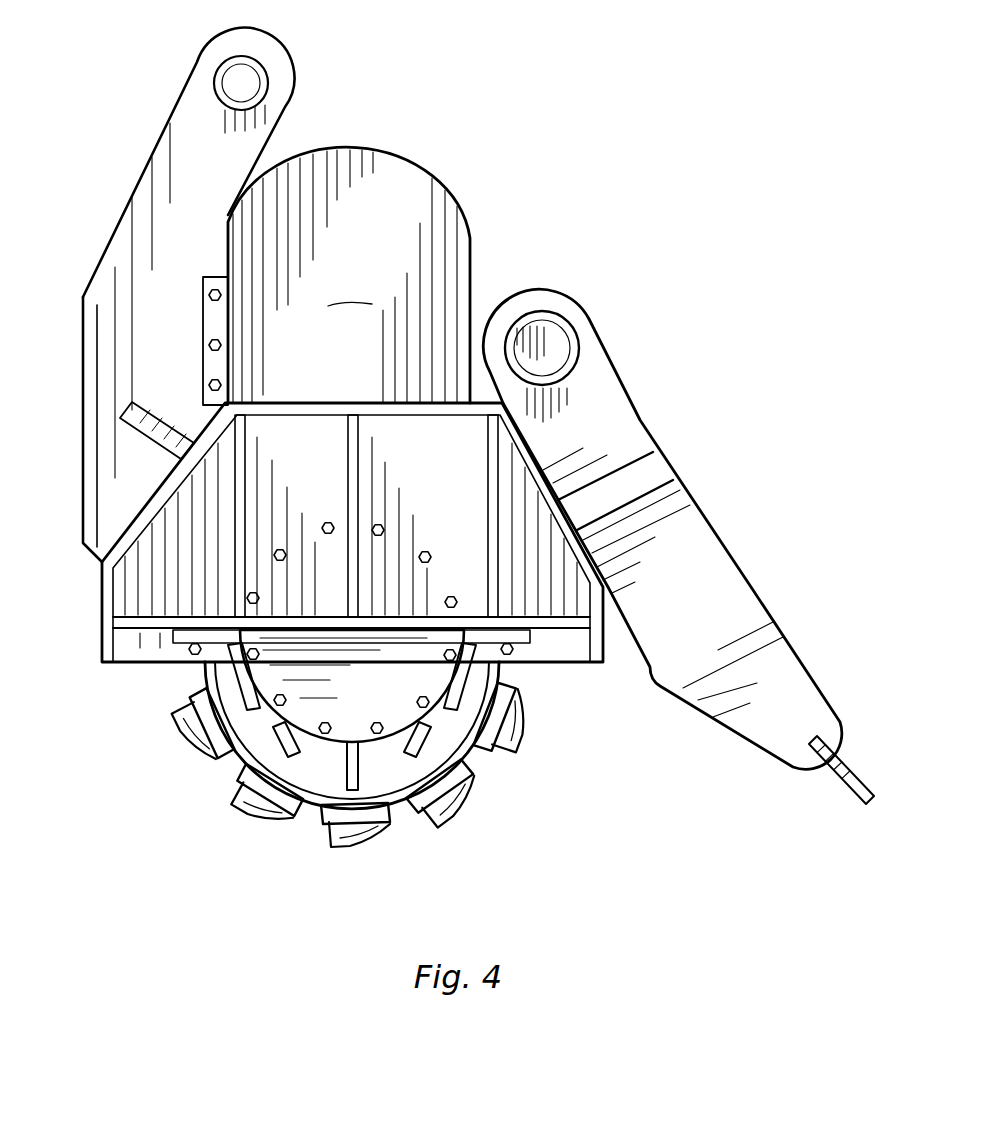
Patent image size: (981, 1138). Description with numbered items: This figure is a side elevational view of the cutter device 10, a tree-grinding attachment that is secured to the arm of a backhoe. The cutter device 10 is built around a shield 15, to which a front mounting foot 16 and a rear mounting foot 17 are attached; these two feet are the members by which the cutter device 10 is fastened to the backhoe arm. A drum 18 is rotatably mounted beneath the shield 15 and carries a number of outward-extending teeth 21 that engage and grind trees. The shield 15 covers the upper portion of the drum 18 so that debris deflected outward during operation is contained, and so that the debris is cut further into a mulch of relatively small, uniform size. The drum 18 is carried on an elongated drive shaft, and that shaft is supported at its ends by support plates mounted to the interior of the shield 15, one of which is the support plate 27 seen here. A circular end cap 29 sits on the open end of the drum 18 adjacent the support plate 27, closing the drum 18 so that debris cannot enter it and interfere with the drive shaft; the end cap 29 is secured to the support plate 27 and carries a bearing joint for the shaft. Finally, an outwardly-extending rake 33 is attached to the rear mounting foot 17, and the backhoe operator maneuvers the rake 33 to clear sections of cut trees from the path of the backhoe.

The cutter device 10 is at (445, 135).
The shield 15 is at (340, 397).
The front mounting foot 16 is at (190, 172).
The rear mounting foot 17 is at (627, 438).
The drum 18 is at (310, 803).
The teeth 21 is at (465, 800).
The support plate 27 is at (152, 587).
The end cap 29 is at (258, 737).
The rake 33 is at (867, 783).